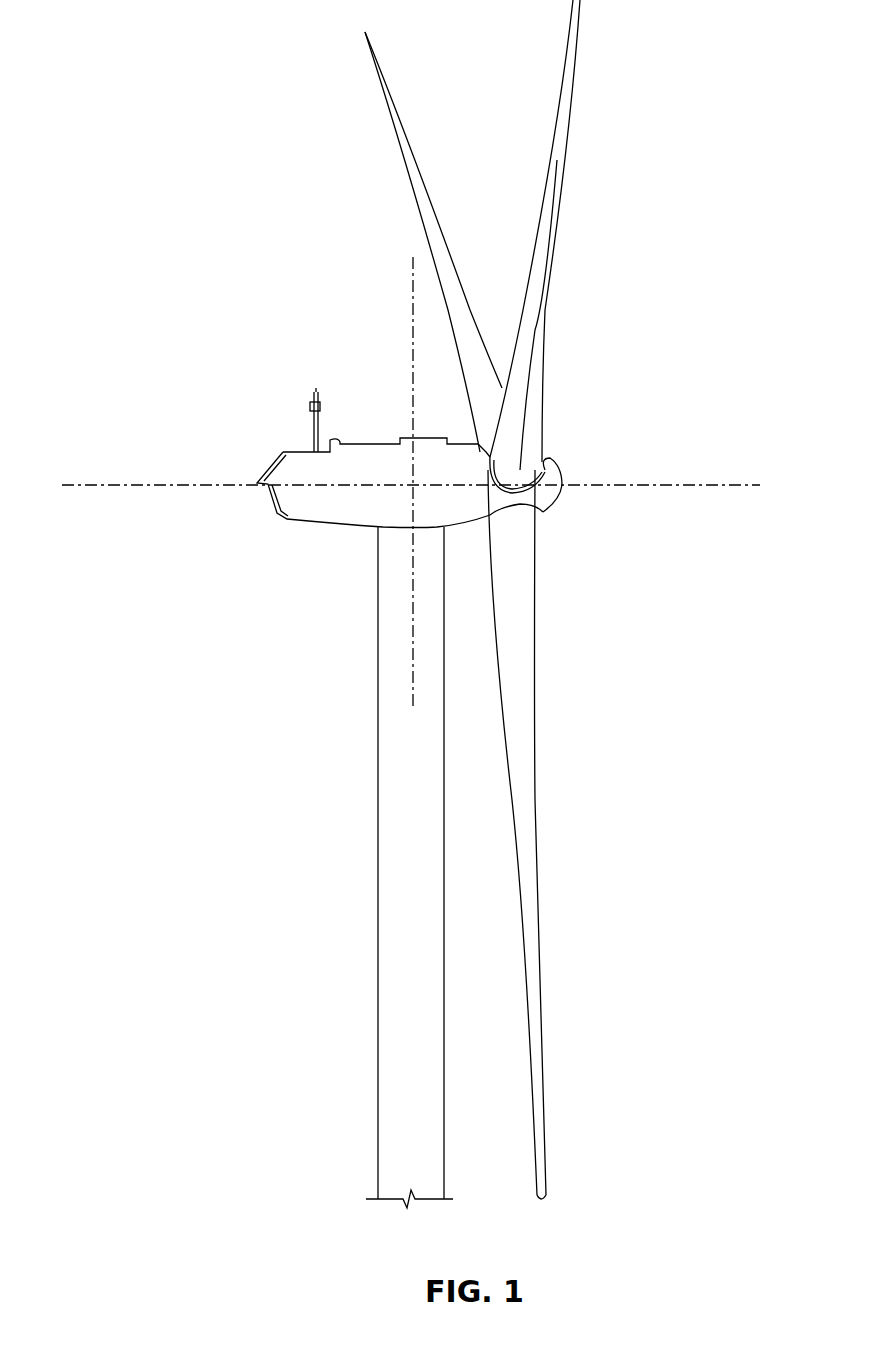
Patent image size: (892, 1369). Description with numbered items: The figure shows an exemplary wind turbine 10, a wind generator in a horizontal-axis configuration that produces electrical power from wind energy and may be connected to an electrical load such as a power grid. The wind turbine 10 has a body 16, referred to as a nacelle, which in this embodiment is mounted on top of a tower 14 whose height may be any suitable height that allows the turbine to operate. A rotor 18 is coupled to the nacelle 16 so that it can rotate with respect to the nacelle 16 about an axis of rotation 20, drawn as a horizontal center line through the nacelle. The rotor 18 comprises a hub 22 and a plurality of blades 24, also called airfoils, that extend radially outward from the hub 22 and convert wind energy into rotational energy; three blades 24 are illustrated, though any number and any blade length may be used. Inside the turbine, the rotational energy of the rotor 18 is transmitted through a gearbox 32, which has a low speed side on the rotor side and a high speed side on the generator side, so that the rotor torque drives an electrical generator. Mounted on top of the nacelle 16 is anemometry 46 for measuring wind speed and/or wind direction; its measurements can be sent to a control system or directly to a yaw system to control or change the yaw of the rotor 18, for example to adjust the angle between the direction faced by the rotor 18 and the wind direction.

The wind turbine 10 is at (268, 58).
The tower 14 is at (377, 824).
The body (nacelle) 16 is at (328, 530).
The rotor 18 is at (552, 536).
The axis of rotation 20 is at (702, 488).
The hub 22 is at (561, 492).
The blades 24 is at (408, 135).
The gearbox 32 is at (412, 318).
The anemometry 46 is at (313, 407).